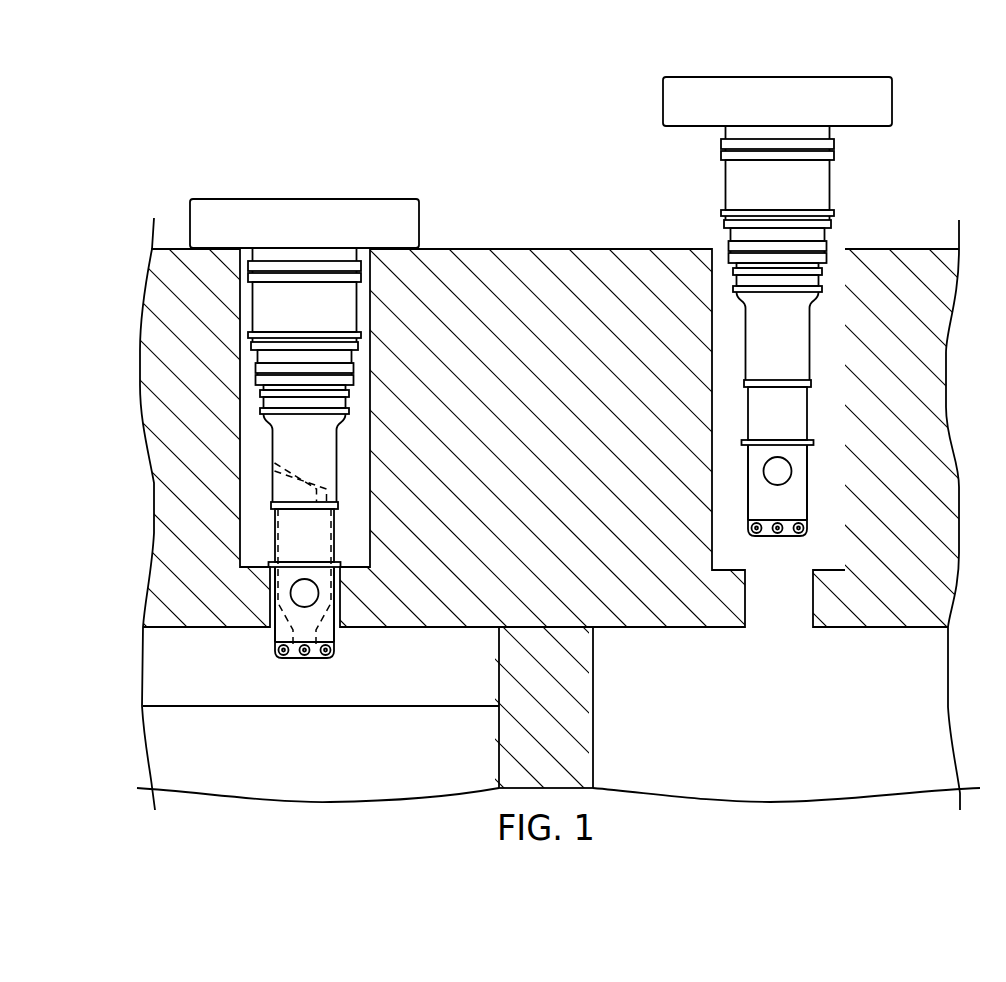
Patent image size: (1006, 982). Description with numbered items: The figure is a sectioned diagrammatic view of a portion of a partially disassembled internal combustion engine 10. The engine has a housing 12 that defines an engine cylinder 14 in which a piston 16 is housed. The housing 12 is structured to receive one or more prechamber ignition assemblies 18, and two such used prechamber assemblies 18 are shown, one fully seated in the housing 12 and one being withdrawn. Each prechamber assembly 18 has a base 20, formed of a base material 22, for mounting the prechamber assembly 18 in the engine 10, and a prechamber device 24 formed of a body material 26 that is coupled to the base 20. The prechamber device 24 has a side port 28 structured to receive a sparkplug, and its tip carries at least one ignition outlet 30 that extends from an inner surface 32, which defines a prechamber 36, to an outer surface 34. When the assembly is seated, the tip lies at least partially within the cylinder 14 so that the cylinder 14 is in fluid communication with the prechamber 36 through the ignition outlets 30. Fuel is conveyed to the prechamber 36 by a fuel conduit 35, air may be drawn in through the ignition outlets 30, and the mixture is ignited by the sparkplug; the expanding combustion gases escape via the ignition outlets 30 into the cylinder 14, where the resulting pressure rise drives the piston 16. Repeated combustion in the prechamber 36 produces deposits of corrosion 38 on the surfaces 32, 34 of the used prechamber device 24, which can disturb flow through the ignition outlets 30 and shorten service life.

The internal combustion engine 10 is at (118, 179).
The housing 12 is at (546, 249).
The engine cylinder 14 is at (933, 677).
The piston 16 is at (162, 733).
The prechamber ignition assembly 18 is at (223, 179).
The base 20 is at (778, 7).
The base material 22 is at (756, 209).
The prechamber device 24 is at (790, 368).
The body material 26 is at (778, 508).
The side port 28 is at (803, 471).
The ignition outlet 30 is at (761, 529).
The inner surface 32 is at (287, 612).
The outer surface 34 is at (334, 630).
The fuel conduit 35 is at (287, 461).
The prechamber 36 is at (321, 577).
The corrosion 38 is at (778, 547).